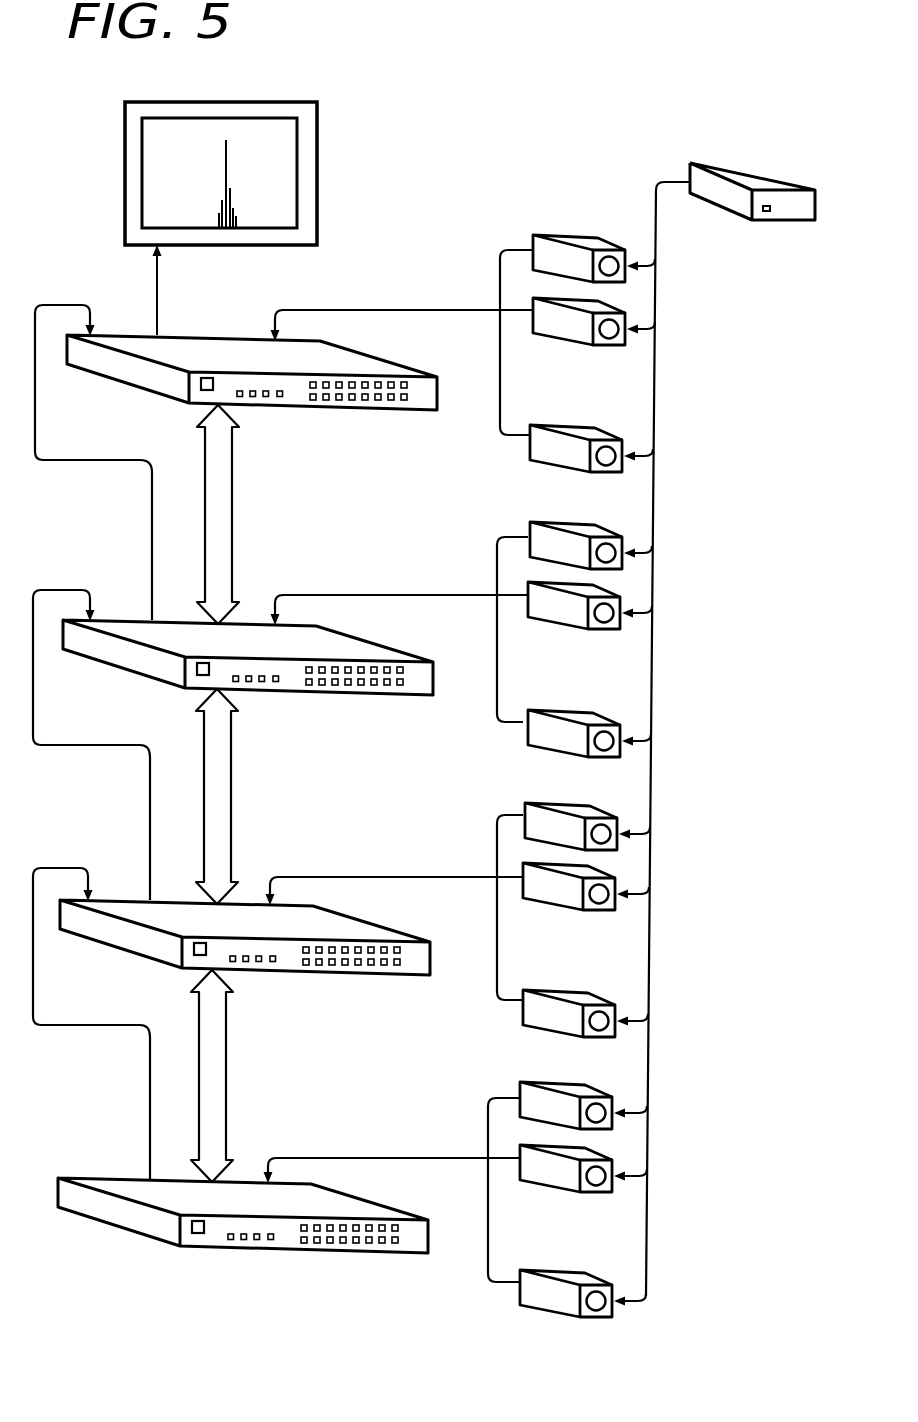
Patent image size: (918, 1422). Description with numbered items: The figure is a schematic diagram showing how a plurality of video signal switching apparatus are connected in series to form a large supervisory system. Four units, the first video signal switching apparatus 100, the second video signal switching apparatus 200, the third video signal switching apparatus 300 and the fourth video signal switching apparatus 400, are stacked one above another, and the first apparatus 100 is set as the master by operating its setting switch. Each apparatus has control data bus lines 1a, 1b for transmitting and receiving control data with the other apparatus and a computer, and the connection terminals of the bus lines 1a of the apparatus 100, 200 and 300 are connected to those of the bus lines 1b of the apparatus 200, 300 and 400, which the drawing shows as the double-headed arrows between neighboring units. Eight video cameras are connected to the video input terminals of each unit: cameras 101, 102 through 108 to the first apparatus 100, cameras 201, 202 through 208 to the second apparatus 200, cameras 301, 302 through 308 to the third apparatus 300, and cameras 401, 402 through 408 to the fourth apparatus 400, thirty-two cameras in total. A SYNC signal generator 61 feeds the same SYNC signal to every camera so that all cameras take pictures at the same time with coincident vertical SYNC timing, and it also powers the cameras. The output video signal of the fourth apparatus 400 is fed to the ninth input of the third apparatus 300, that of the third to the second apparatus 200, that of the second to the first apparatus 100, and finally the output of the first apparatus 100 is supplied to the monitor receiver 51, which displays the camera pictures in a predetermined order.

The monitor receiver 51 is at (317, 170).
The SYNC signal generator 61 is at (782, 220).
The first video signal switching apparatus 100 is at (365, 410).
The second video signal switching apparatus 200 is at (362, 690).
The third video signal switching apparatus 300 is at (362, 972).
The fourth video signal switching apparatus 400 is at (363, 1252).
The control data bus line 1a is at (225, 793).
The control data bus line 1b is at (225, 793).
The video camera 101 is at (597, 236).
The video camera 102 is at (547, 345).
The video camera 108 is at (596, 428).
The video camera 201 is at (582, 524).
The video camera 202 is at (555, 630).
The video camera 208 is at (577, 712).
The video camera 301 is at (577, 805).
The video camera 302 is at (556, 912).
The video camera 308 is at (590, 992).
The video camera 401 is at (585, 1086).
The video camera 402 is at (553, 1191).
The video camera 408 is at (585, 1272).